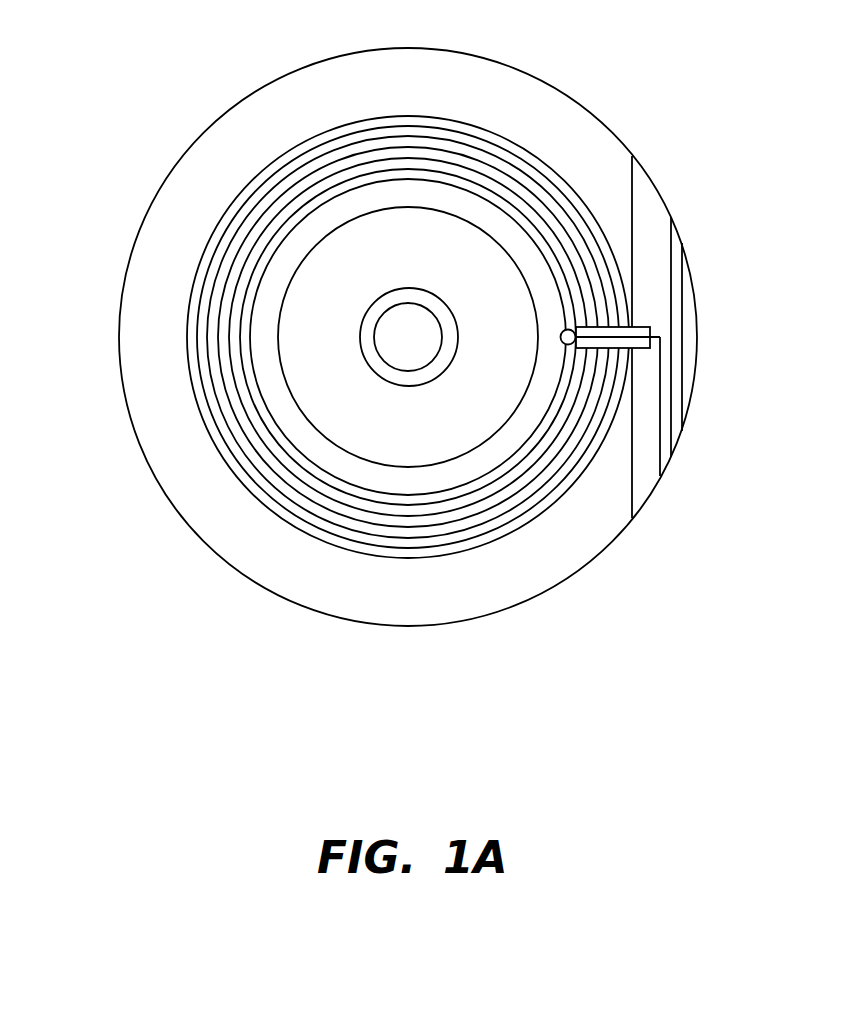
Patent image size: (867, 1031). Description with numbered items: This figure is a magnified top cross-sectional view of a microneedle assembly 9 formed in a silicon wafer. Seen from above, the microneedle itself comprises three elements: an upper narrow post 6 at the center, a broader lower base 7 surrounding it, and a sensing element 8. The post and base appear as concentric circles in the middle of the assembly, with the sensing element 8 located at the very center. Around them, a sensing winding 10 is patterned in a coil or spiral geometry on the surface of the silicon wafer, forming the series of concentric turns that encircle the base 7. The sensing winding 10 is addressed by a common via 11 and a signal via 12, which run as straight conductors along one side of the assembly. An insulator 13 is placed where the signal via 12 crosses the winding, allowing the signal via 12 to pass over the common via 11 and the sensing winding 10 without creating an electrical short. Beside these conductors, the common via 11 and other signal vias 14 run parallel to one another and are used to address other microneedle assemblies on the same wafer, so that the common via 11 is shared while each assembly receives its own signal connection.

The transponder / RFID tag 9 is at (138, 65).
The sensing winding 10 is at (272, 182).
The upper narrow post 6 is at (372, 313).
The sensing element 8 is at (386, 337).
The broader lower base 7 is at (298, 380).
The common via 11 is at (632, 169).
The signal via 12 is at (662, 468).
The insulator 13 is at (640, 329).
The other signal vias 14 is at (692, 343).